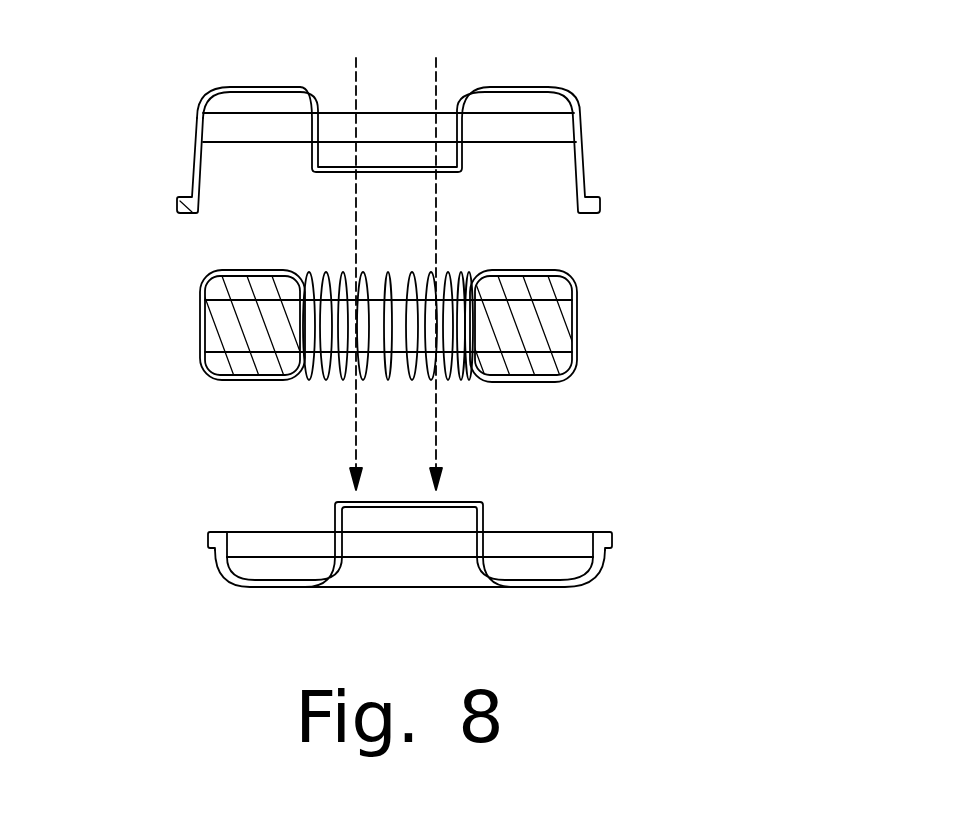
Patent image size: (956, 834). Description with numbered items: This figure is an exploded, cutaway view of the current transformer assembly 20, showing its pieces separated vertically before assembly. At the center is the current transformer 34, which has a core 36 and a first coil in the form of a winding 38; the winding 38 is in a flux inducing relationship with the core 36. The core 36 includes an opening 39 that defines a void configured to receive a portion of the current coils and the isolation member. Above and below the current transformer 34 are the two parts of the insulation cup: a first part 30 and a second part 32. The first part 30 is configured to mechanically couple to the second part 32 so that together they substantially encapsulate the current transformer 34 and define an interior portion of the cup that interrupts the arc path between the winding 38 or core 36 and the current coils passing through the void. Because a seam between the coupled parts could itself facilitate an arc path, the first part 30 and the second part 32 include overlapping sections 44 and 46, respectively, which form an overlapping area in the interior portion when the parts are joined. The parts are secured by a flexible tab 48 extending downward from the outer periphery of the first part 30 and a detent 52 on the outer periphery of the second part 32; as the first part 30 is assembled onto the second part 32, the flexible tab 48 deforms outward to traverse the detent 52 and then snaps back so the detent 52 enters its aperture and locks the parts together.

The current transformer assembly 20 is at (675, 104).
The first part 30 is at (389, 145).
The second part 32 is at (407, 522).
The current transformer 34 is at (430, 334).
The core 36 is at (528, 287).
The winding 38 is at (568, 373).
The opening 39 is at (382, 395).
The overlapping section 44 is at (320, 154).
The overlapping section 46 is at (342, 523).
The flexible tab 48 is at (195, 157).
The detent 52 is at (210, 540).